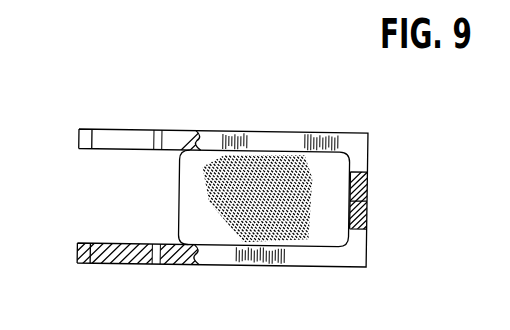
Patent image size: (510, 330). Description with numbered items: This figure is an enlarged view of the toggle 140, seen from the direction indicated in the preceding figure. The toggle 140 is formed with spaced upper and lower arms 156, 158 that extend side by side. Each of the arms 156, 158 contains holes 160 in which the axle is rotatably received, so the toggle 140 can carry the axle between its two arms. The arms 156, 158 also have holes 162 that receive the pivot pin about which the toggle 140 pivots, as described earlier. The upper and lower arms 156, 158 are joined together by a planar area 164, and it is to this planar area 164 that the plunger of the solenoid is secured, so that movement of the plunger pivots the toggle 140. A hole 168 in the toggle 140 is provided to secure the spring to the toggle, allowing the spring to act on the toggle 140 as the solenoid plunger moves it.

The toggle 140 is at (288, 128).
The upper arm 156 is at (117, 149).
The lower arm 158 is at (115, 243).
The holes 160 is at (92, 130).
The holes 162 is at (163, 130).
The planar area 164 is at (313, 237).
The hole 168 is at (368, 197).